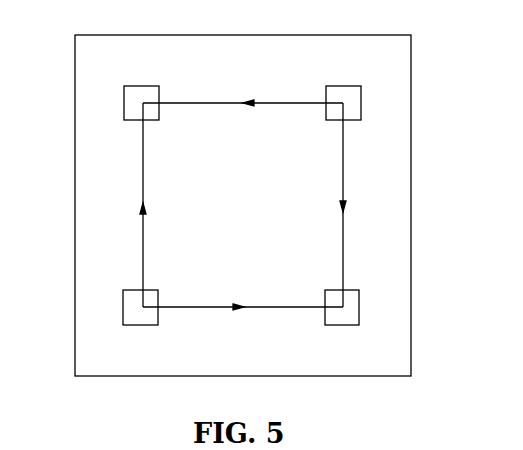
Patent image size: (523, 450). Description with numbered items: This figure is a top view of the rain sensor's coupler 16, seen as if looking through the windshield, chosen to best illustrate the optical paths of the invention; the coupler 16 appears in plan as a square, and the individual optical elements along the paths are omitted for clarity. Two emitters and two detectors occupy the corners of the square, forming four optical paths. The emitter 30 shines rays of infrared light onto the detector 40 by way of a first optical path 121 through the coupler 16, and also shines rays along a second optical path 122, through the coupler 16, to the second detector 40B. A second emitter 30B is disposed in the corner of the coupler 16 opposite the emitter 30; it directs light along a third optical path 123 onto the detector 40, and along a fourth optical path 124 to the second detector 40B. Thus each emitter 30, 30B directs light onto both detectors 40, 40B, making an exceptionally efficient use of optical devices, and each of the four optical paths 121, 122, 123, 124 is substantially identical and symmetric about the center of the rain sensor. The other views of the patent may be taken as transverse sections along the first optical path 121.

The coupler 16 is at (342, 376).
The emitter 30 is at (123, 307).
The second emitter 30B is at (361, 106).
The detector 40 is at (124, 104).
The second detector 40B is at (359, 313).
The first optical path 121 is at (93, 205).
The second optical path 122 is at (229, 307).
The third optical path 123 is at (193, 103).
The fourth optical path 124 is at (343, 263).